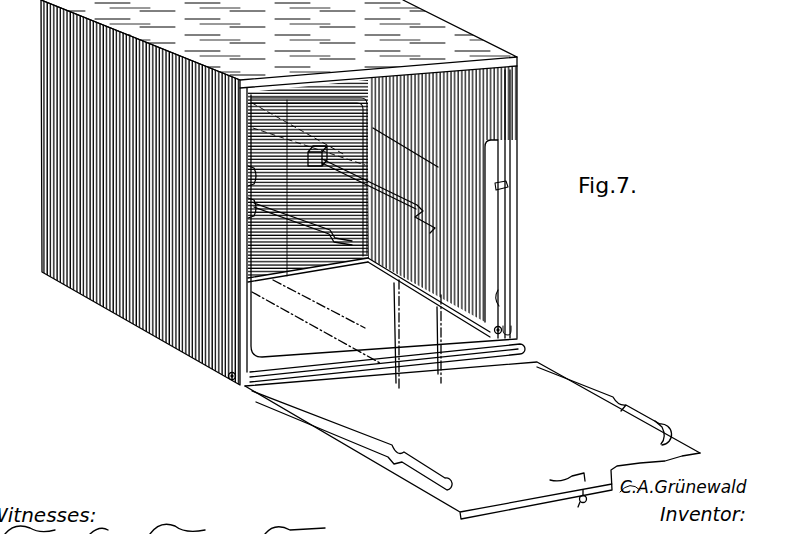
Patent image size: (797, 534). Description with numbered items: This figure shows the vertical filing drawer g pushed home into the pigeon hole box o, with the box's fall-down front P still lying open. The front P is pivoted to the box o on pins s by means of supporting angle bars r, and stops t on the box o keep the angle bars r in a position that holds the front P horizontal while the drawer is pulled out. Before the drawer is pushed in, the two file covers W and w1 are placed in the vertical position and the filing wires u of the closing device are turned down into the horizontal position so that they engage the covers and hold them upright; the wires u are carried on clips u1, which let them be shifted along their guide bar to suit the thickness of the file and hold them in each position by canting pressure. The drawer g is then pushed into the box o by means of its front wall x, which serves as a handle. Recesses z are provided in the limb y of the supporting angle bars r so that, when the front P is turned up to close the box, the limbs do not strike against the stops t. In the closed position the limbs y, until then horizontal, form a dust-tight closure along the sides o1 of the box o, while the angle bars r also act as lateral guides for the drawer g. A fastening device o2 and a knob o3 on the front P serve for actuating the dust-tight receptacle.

The pigeon hole box o is at (118, 311).
The sides of the box o1 is at (528, 235).
The fastening device o2 is at (557, 478).
The knob o3 is at (578, 505).
The stops t is at (505, 184).
The supporting angle bars r is at (512, 289).
The pins s is at (229, 380).
The front wall x is at (538, 356).
The fall-down front P is at (472, 440).
The limb of the supporting angle bars y is at (347, 430).
The recesses z is at (623, 407).
The filing wires u is at (351, 244).
The clips u1 is at (313, 168).
The file cover W is at (392, 141).
The file cover w1 is at (299, 325).
The vertical filing drawer g is at (376, 335).